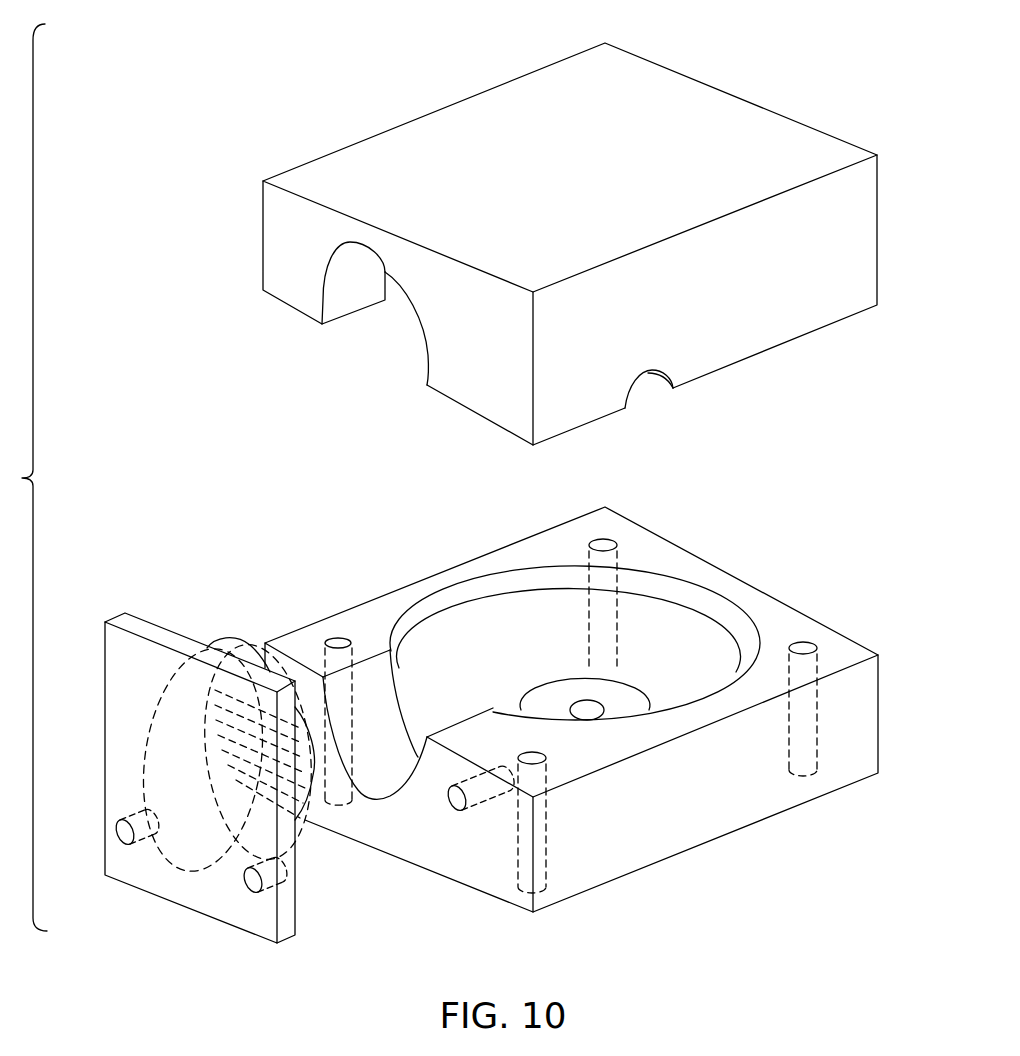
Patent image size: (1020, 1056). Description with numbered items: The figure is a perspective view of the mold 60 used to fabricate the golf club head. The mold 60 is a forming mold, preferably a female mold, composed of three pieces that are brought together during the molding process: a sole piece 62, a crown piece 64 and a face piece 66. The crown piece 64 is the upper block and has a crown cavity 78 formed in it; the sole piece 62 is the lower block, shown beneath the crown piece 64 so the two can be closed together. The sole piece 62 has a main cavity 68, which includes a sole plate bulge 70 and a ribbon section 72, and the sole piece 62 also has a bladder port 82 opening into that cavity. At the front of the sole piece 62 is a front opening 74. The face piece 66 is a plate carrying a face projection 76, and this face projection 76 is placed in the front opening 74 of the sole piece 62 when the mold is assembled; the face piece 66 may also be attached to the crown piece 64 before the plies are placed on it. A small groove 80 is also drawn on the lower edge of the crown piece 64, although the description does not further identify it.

The mold 60 is at (748, 70).
The sole piece 62 is at (798, 618).
The crown piece 64 is at (330, 157).
The face piece 66 is at (157, 633).
The main cavity 68 is at (480, 627).
The sole plate bulge 70 is at (543, 700).
The ribbon section 72 is at (688, 598).
The front opening 74 is at (378, 780).
The face projection 76 is at (235, 640).
The crown cavity 78 is at (347, 293).
The groove 80 is at (643, 393).
The bladder port 82 is at (585, 707).